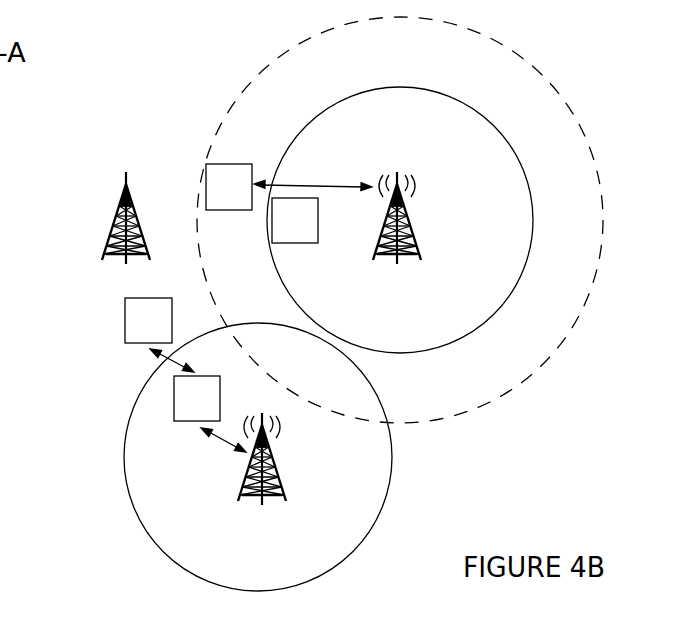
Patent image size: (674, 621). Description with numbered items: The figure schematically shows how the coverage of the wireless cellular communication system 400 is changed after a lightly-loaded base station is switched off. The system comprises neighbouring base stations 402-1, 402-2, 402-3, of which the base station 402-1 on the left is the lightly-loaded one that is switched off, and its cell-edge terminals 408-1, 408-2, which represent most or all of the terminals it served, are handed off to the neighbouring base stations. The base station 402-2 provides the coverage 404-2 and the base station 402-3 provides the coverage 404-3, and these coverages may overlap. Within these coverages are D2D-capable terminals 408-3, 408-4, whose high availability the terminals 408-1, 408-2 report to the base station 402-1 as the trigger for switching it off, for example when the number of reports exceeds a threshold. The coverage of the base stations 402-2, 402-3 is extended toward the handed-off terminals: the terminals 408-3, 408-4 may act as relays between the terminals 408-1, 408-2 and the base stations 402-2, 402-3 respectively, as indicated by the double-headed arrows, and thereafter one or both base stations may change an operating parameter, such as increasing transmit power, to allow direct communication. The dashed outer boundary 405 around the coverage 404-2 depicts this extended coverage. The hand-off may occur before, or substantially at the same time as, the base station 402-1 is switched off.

The wireless cellular communication system 400 is at (56, 429).
The base station 402-1 is at (118, 215).
The base station 402-2 is at (406, 222).
The base station 402-3 is at (272, 463).
The coverage 404-2 is at (481, 115).
The coverage 404-3 is at (386, 409).
The extended coverage area 405 is at (497, 40).
The terminal 408-1 is at (206, 182).
The terminal 408-2 is at (124, 330).
The D2D-capable terminal 408-3 is at (288, 244).
The D2D-capable terminal 408-4 is at (174, 398).